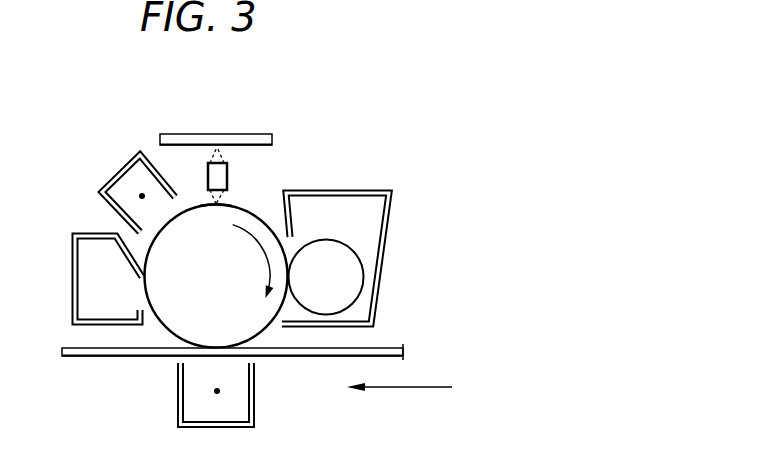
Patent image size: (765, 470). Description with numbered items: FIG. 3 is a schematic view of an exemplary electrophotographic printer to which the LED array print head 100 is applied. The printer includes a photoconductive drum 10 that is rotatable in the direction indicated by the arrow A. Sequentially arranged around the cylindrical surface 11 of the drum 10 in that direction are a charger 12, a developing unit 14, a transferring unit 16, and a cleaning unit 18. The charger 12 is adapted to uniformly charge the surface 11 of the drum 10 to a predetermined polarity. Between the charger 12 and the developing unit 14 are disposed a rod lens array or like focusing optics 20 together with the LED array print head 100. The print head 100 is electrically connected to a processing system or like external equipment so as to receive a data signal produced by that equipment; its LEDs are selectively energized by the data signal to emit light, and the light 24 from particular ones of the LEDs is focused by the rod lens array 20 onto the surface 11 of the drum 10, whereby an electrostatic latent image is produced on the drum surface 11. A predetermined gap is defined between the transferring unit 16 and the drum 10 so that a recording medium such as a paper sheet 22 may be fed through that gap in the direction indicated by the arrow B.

The photoconductive drum 10 is at (247, 221).
The cylindrical surface 11 is at (235, 204).
The charger 12 is at (106, 178).
The developing unit 14 is at (383, 272).
The transferring unit 16 is at (257, 393).
The cleaning unit 18 is at (72, 252).
The rod lens array 20 is at (228, 170).
The paper sheet 22 is at (110, 358).
The light 24 is at (209, 155).
The LED array print head 100 is at (247, 133).
The arrow A is at (263, 257).
The arrow B is at (385, 388).